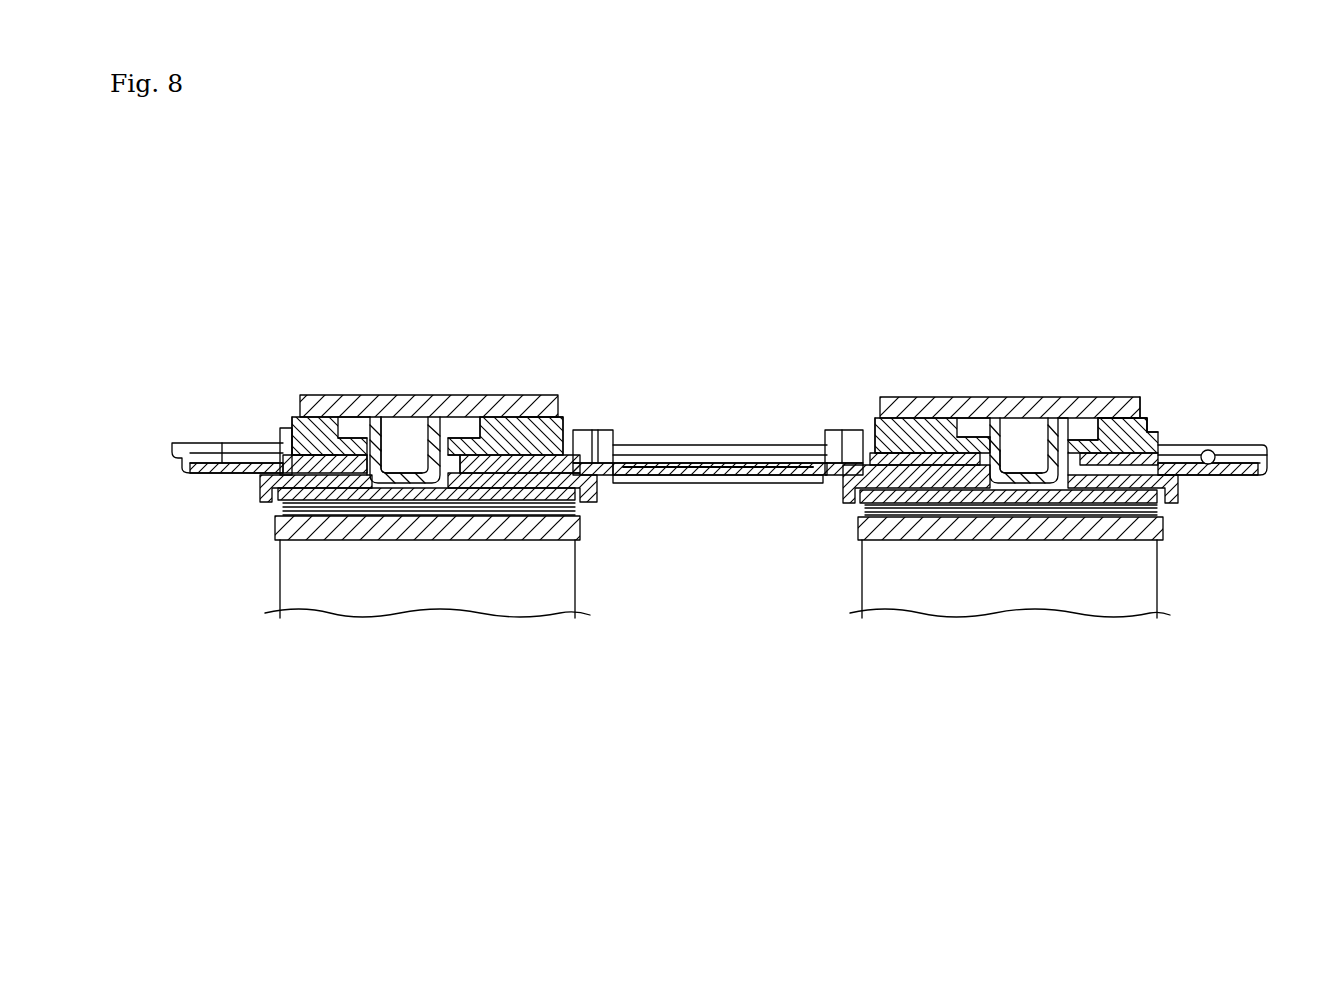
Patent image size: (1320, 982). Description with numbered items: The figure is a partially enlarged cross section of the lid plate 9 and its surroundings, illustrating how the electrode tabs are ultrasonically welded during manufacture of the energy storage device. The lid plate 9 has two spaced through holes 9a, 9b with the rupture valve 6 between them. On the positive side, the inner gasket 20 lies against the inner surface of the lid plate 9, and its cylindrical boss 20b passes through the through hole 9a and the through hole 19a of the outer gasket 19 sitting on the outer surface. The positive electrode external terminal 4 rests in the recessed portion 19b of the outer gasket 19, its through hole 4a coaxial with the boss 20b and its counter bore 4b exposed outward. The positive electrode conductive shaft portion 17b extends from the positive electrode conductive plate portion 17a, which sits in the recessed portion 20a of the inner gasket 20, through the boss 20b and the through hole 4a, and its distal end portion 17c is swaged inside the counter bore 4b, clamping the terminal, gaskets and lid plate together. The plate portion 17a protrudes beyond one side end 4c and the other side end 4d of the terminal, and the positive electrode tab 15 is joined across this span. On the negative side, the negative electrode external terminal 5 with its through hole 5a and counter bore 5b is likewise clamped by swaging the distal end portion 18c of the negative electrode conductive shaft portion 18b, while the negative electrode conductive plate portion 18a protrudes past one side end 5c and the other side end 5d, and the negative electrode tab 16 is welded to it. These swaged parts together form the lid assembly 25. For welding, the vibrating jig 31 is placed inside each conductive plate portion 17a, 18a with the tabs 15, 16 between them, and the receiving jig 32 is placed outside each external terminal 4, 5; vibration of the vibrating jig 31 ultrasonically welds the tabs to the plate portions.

The positive electrode external terminal 4 is at (928, 418).
The through hole 4a is at (1040, 425).
The counter bore 4b is at (1085, 420).
The one side end 4c is at (870, 420).
The other side end 4d is at (1142, 408).
The negative electrode external terminal 5 is at (500, 395).
The through hole 5a is at (425, 440).
The counter bore 5b is at (470, 452).
The one side end 5c is at (292, 418).
The other side end 5d is at (585, 430).
The rupture valve 6 is at (712, 447).
The lid plate 9 is at (1262, 450).
The through hole 9a is at (985, 480).
The through hole 9b is at (430, 478).
The positive electrode tab 15 is at (843, 485).
The negative electrode tab 16 is at (585, 500).
The positive electrode conductive plate portion 17a is at (1110, 505).
The positive electrode conductive shaft portion 17b is at (1050, 478).
The distal end portion 17c is at (960, 430).
The negative electrode conductive plate portion 18a is at (500, 505).
The negative electrode conductive shaft portion 18b is at (393, 475).
The distal end portion 18c is at (373, 425).
The outer gasket 19 is at (283, 428).
The through hole 19a is at (405, 485).
The recessed portion 19b is at (535, 420).
The inner gasket 20 is at (265, 482).
The recessed portion 20a is at (283, 497).
The boss 20b is at (383, 455).
The lid assembly 25 is at (1208, 450).
The vibrating jig 31 is at (580, 530).
The receiving jig 32 is at (313, 395).